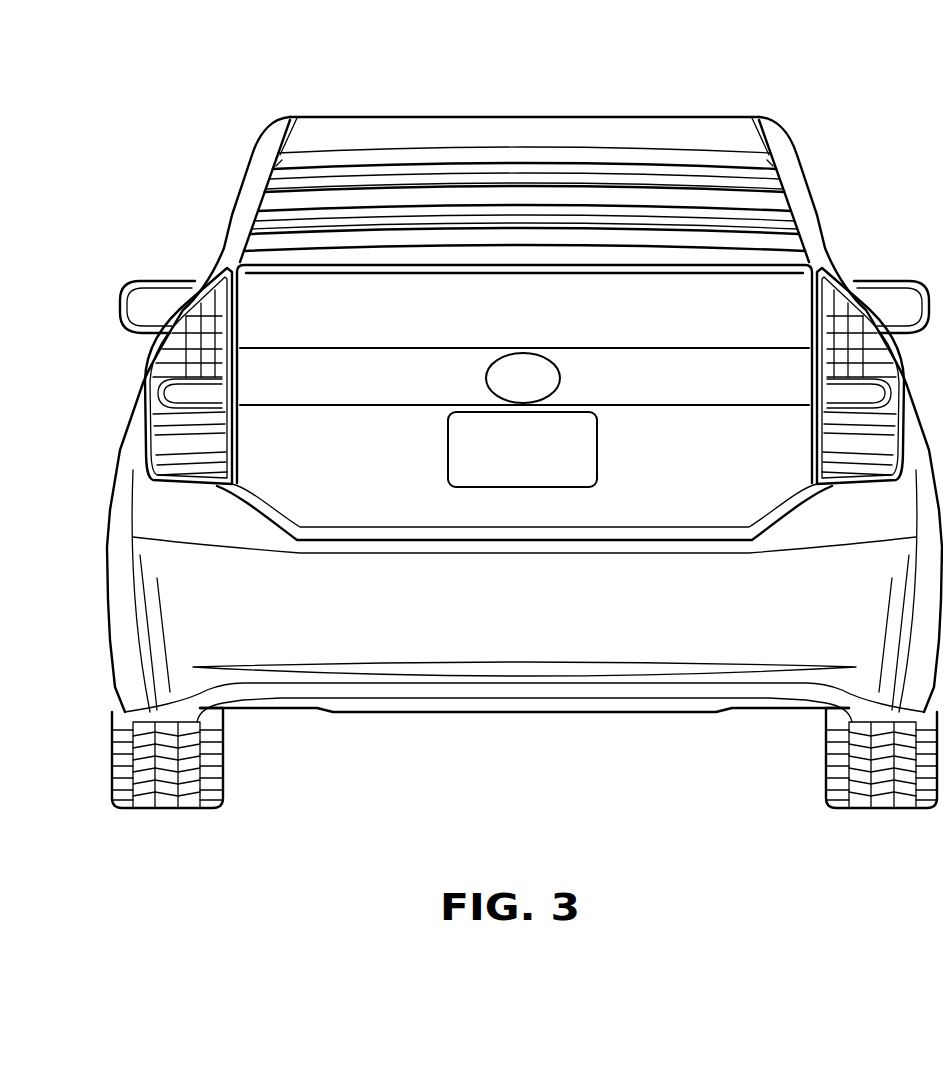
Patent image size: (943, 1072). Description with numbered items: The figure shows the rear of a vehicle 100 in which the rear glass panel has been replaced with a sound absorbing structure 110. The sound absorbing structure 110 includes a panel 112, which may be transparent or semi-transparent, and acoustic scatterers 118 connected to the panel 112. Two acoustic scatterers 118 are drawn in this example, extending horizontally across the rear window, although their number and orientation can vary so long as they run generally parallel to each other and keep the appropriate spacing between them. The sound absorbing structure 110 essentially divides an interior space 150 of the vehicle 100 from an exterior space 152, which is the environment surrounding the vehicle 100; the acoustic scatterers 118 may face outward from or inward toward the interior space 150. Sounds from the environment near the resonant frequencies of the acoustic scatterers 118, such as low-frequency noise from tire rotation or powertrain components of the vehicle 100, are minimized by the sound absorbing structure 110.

The vehicle 100 is at (793, 147).
The sound absorbing structure 110 is at (450, 153).
The panel 112 is at (518, 153).
The acoustic scatterers 118 is at (723, 170).
The interior space 150 is at (337, 158).
The exterior space 152 is at (139, 212).